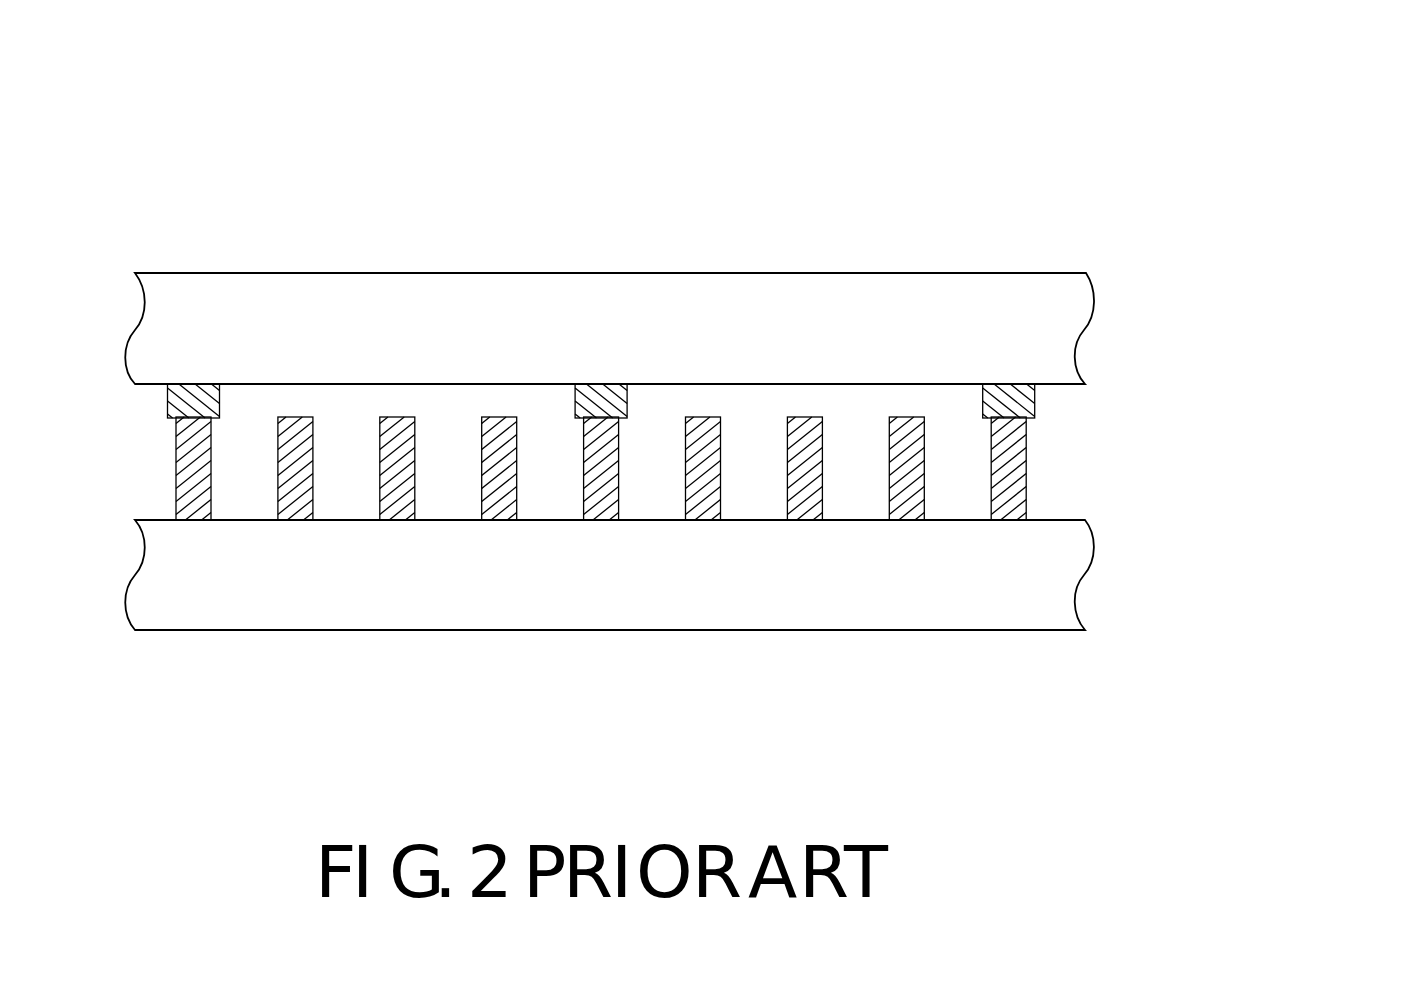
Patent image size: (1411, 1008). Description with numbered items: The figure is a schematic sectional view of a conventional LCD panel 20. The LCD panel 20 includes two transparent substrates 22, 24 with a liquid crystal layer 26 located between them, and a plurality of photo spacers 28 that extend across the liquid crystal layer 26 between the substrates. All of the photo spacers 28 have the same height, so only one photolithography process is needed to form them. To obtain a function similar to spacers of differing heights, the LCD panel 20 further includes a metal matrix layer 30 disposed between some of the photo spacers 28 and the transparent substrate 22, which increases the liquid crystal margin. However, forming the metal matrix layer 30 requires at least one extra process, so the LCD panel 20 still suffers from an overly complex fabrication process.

The LCD panel 20 is at (1224, 148).
The transparent substrate 22 is at (1058, 324).
The transparent substrate 24 is at (1058, 571).
The liquid crystal layer 26 is at (1110, 385).
The photo spacers 28 is at (187, 465).
The metal matrix layer 30 is at (200, 395).